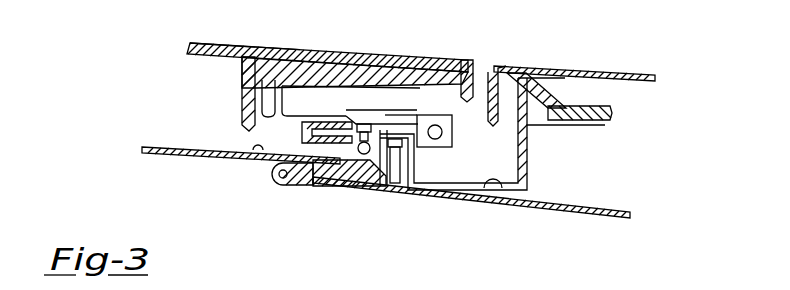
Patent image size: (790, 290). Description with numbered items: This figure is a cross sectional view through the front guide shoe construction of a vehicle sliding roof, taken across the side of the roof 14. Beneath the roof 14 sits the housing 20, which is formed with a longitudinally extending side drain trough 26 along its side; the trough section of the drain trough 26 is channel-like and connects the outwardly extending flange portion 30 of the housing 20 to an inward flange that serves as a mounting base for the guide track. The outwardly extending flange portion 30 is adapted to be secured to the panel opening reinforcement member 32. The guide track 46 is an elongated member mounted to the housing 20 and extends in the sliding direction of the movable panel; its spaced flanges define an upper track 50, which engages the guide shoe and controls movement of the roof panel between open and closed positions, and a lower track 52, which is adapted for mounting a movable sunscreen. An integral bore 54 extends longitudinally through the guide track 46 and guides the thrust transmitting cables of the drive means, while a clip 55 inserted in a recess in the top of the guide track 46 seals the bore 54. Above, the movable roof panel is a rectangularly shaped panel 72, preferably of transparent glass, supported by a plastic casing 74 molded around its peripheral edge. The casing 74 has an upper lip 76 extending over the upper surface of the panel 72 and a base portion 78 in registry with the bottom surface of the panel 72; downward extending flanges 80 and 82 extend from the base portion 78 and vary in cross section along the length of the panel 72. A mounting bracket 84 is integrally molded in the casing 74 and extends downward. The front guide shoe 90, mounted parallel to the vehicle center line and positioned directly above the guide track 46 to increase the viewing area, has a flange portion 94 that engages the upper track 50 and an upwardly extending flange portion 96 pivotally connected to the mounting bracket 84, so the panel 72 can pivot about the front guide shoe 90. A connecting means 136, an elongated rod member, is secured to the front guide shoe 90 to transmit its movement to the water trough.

The roof 14 is at (592, 67).
The housing 20 is at (545, 179).
The side drain trough 26 is at (500, 190).
The outwardly extending flange portion 30 is at (583, 130).
The panel opening reinforcement member 32 is at (557, 97).
The guide track 46 is at (395, 168).
The upper track 50 is at (305, 143).
The lower track 52 is at (253, 160).
The bore 54 is at (376, 190).
The clip 55 is at (375, 112).
The panel 72 is at (247, 43).
The casing 74 is at (480, 20).
The upper lip 76 is at (452, 56).
The base portion 78 is at (320, 58).
The downward extending flange 80 is at (243, 103).
The downward extending flange 82 is at (480, 75).
The mounting bracket 84 is at (243, 100).
The front guide shoe 90 is at (460, 127).
The flange portion 94 is at (340, 126).
The upwardly extending flange portion 96 is at (288, 103).
The connecting means 136 is at (466, 155).